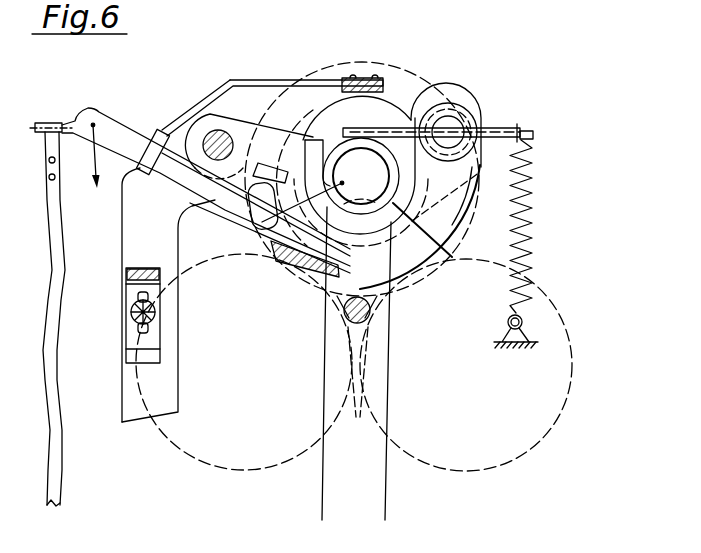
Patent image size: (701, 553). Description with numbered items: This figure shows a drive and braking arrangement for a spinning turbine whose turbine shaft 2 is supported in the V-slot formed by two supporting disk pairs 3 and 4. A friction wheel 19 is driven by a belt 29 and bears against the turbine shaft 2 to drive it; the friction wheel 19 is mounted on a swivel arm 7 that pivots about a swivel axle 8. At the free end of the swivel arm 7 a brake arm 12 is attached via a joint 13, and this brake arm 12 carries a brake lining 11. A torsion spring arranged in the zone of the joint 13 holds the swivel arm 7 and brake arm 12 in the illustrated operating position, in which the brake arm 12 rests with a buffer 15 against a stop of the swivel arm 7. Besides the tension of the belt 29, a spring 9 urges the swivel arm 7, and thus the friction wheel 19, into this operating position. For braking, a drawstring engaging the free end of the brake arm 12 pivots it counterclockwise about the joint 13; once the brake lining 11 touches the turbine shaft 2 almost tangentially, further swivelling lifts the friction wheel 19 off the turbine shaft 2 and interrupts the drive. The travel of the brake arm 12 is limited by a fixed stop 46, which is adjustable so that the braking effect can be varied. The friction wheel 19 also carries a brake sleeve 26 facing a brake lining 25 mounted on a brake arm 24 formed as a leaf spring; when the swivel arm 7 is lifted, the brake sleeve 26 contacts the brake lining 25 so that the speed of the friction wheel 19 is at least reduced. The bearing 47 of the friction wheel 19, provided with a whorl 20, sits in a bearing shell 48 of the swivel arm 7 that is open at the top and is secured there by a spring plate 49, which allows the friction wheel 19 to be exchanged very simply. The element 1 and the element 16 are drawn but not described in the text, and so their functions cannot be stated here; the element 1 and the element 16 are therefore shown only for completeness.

The type lever path 1 is at (357, 418).
The turbine shaft 2 is at (361, 312).
The supporting disk pair 3 is at (225, 441).
The supporting disk pair 4 is at (487, 456).
The swivel arm 7 is at (223, 116).
The swivel axle 8 is at (217, 143).
The spring 9 is at (530, 251).
The brake lining 11 is at (298, 258).
The brake arm 12 is at (456, 207).
The joint 13 is at (459, 117).
The buffer 15 is at (257, 207).
The bar 16 is at (58, 282).
The friction wheel 19 is at (424, 70).
The whorl 20 is at (393, 201).
The brake arm 24 is at (266, 80).
The brake lining 25 is at (369, 78).
The brake sleeve 26 is at (337, 99).
The belt 29 is at (321, 473).
The fixed stop 46 is at (134, 327).
The bearing 47 is at (297, 237).
The bearing shell 48 is at (315, 148).
The spring plate 49 is at (500, 136).